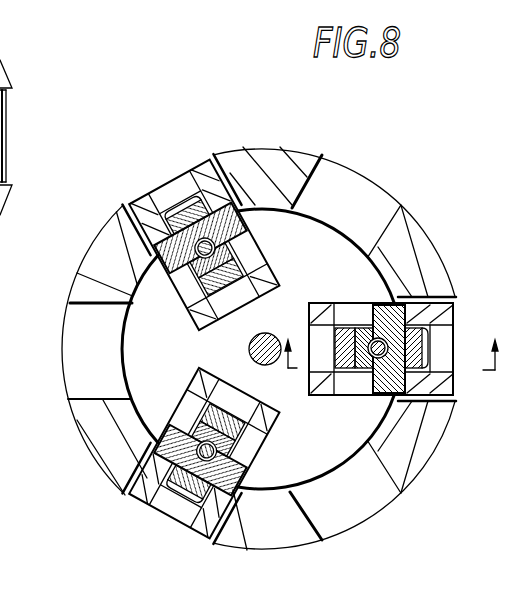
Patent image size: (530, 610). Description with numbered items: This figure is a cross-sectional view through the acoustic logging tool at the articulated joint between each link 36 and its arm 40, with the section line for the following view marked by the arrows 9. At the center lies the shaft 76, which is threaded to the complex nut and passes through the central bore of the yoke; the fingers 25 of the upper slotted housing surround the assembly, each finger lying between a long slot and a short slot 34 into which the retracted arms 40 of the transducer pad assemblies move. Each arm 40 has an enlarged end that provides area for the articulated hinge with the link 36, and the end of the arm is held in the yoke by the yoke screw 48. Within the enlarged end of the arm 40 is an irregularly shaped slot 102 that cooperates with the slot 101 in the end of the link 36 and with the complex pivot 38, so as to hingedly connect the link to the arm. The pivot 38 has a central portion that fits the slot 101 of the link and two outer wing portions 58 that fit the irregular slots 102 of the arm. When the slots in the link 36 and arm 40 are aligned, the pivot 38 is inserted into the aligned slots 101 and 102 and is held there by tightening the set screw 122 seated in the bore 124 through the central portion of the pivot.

The fingers 25 is at (110, 442).
The short slot 34 is at (100, 398).
The link 36 is at (413, 356).
The complex pivot 38 is at (391, 396).
The arm 40 is at (430, 297).
The yoke screw 48 is at (13, 174).
The outer wing portions 58 is at (387, 300).
The shaft 76 is at (249, 346).
The slot 101 is at (191, 398).
The irregularly shaped slot 102 is at (334, 306).
The set screw 122 is at (356, 326).
The bore 124 is at (368, 370).
The section line 9- 9 is at (391, 368).